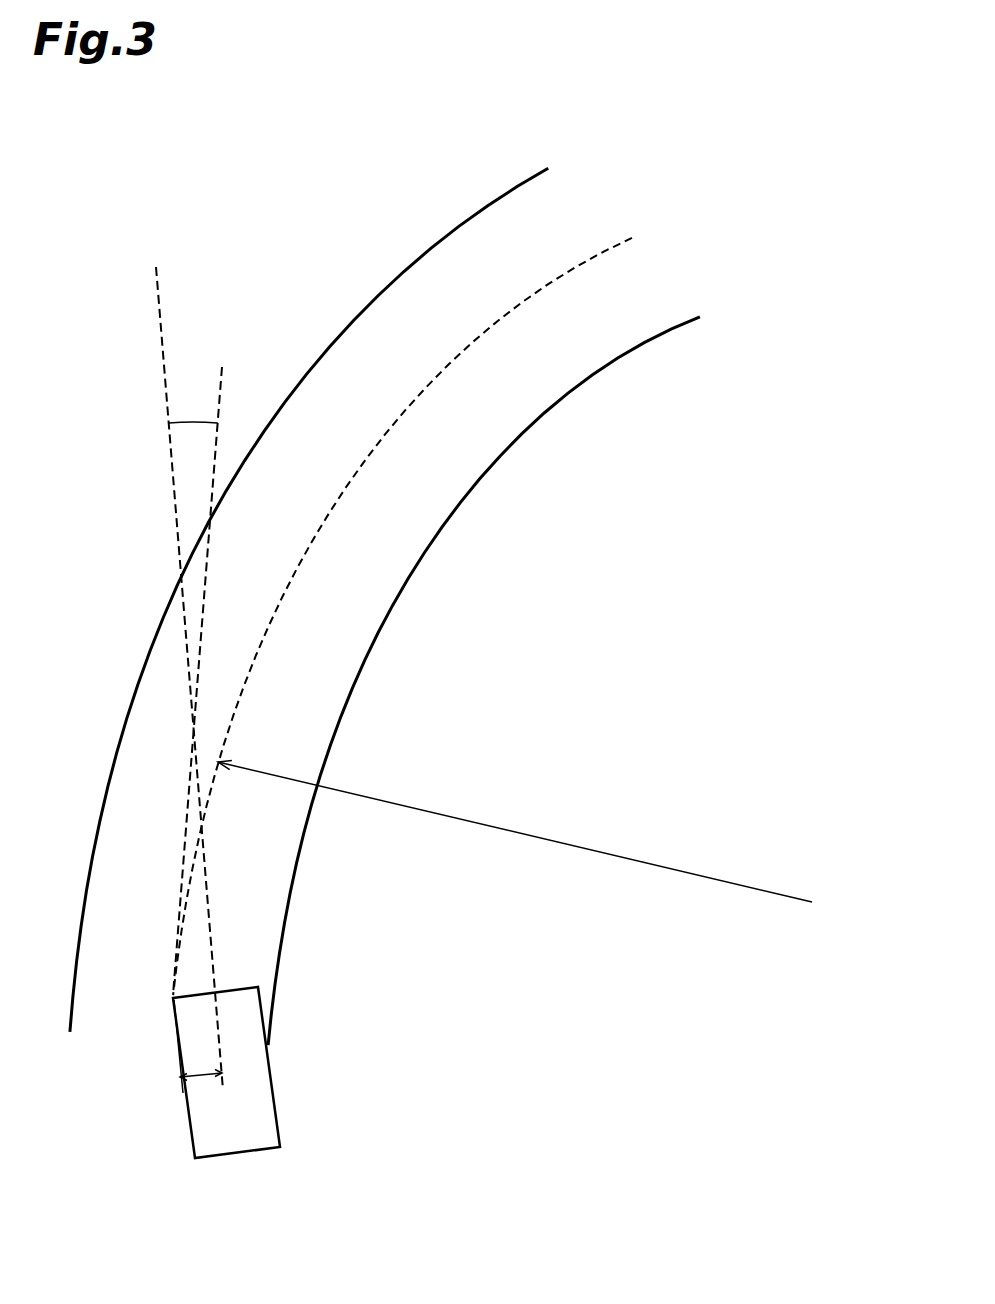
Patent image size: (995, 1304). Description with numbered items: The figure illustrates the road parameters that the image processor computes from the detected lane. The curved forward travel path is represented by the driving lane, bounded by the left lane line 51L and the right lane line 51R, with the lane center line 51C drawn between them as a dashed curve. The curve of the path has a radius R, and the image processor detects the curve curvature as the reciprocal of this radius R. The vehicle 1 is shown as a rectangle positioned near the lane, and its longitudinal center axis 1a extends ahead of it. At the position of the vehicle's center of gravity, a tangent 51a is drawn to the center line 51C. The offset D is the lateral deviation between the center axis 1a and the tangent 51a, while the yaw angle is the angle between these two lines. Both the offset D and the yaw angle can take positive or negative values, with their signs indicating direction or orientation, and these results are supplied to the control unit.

The vehicle 1 is at (277, 1103).
The center axis in the longitudinal direction of the vehicle 1a is at (157, 335).
The tangent to the center line of the driving lane 51a is at (222, 383).
The left lane line of the driving lane 51L is at (447, 237).
The center line of the driving lane 51C is at (602, 253).
The right lane line of the driving lane 51R is at (630, 350).
The curve radius of the forward travel path R is at (515, 831).
The offset D is at (201, 1094).